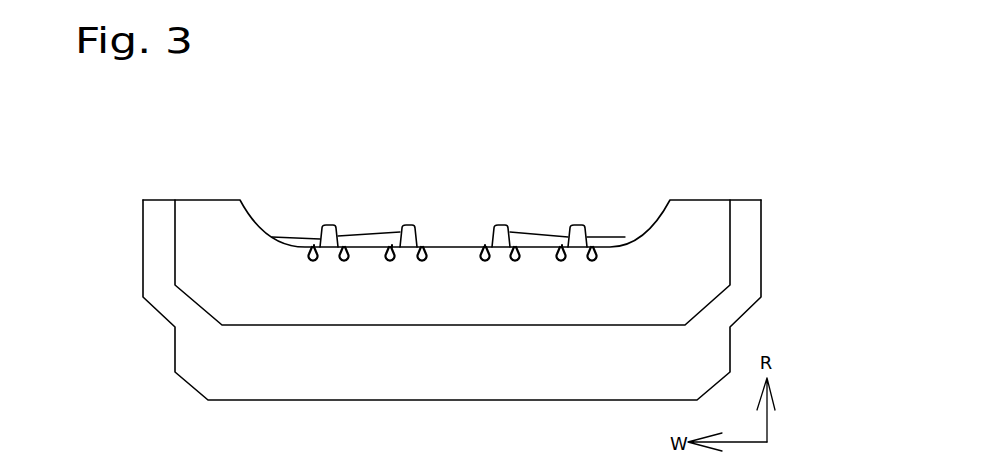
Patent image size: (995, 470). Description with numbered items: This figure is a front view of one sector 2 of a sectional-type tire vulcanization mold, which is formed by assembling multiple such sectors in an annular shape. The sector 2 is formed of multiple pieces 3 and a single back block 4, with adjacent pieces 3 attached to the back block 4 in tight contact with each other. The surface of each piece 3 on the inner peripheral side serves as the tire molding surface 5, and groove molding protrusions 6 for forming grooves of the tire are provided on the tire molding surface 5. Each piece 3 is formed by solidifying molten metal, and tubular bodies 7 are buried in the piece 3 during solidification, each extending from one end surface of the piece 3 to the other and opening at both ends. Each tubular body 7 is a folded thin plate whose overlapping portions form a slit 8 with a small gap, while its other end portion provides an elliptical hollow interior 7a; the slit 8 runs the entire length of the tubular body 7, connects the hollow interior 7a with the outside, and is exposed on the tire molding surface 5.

The sector 2 is at (451, 239).
The piece 3 is at (212, 199).
The back block 4 is at (215, 380).
The tire molding surface 5 is at (353, 228).
The groove molding protrusion 6 is at (292, 240).
The tubular body 7 is at (313, 264).
The hollow interior 7a is at (345, 264).
The slit 8 is at (314, 243).